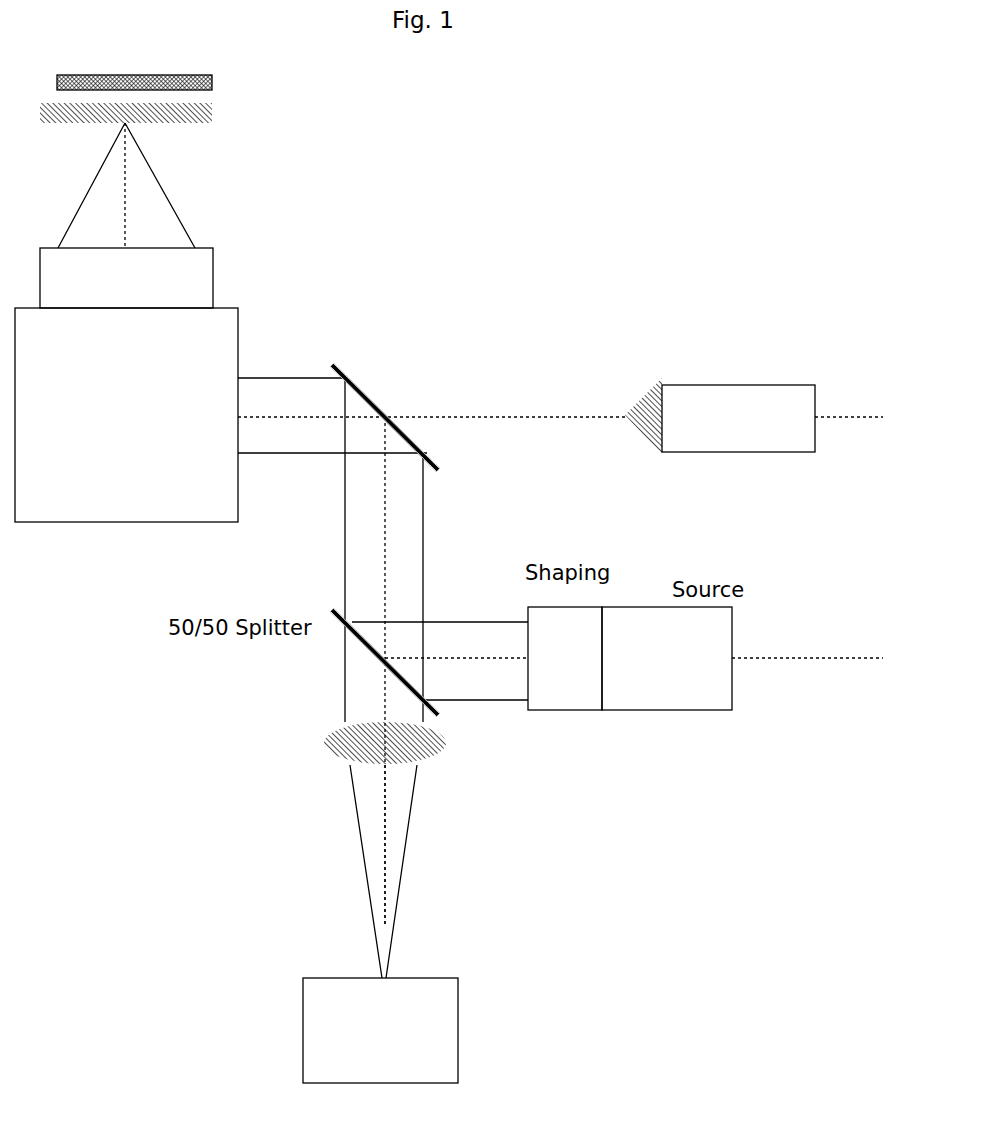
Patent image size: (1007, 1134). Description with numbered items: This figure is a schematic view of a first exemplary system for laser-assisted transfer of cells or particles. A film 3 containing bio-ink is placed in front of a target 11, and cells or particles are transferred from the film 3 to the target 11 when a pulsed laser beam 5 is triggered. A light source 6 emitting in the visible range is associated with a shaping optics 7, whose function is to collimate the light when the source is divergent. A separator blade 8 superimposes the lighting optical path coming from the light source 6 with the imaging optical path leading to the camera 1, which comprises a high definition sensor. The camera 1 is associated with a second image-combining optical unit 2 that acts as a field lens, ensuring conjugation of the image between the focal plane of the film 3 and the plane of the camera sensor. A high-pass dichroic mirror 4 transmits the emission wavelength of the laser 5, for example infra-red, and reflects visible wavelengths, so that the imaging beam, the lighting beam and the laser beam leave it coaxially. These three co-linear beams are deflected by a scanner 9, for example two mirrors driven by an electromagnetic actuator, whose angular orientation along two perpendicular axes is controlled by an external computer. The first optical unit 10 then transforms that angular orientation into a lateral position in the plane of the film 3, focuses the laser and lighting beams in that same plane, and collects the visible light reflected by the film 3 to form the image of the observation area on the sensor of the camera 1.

The camera 1 is at (380, 1030).
The second image-combining optical unit 2 is at (323, 742).
The film 3 is at (195, 124).
The high-pass dichroic mirror 4 is at (402, 423).
The pulsed laser beam 5 is at (720, 416).
The light source 6 is at (667, 658).
The shaping optics 7 is at (565, 658).
The separator blade 8 is at (385, 653).
The scanner 9 is at (126, 415).
The first optical unit 10 is at (126, 278).
The target 11 is at (212, 80).